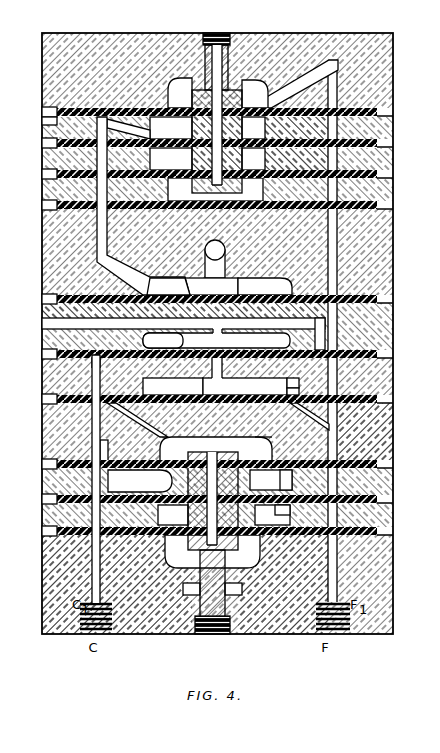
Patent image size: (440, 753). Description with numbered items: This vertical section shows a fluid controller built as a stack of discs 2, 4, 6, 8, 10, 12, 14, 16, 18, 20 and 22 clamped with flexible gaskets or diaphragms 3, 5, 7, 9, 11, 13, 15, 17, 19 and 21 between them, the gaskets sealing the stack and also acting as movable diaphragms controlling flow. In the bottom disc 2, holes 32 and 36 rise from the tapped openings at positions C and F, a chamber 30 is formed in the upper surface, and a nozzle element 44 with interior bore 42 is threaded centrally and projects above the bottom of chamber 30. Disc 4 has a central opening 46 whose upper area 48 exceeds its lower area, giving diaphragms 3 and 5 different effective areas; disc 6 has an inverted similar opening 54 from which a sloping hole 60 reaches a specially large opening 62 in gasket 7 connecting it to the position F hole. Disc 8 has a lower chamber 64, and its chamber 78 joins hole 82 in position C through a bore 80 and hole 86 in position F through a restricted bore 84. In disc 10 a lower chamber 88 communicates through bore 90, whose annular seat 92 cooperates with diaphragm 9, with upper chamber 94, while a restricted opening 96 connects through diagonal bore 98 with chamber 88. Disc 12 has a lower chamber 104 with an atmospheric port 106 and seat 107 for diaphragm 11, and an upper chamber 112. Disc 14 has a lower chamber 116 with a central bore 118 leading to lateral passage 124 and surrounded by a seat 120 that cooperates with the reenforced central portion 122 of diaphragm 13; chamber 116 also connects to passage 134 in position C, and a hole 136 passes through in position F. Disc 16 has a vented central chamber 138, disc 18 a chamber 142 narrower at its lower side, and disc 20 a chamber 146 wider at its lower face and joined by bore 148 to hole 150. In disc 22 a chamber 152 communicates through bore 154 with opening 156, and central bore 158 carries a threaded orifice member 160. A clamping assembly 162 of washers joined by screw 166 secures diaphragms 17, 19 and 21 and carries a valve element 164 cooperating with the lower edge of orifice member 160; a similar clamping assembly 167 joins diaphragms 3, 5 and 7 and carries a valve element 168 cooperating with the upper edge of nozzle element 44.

The disc 2 is at (394, 582).
The disc 4 is at (394, 527).
The disc 6 is at (394, 492).
The disc 8 is at (394, 445).
The disc 10 is at (394, 388).
The disc 12 is at (394, 340).
The disc 14 is at (394, 250).
The disc 16 is at (394, 208).
The disc 18 is at (394, 178).
The disc 20 is at (394, 140).
The disc 22 is at (394, 80).
The gasket 3 is at (85, 529).
The gasket 5 is at (88, 497).
The gasket 7 is at (88, 464).
The diaphragm 9 is at (78, 395).
The diaphragm 11 is at (85, 350).
The diaphragm 13 is at (85, 295).
The gasket 15 is at (92, 203).
The diaphragm 17 is at (92, 170).
The diaphragm 19 is at (92, 140).
The diaphragm 21 is at (92, 108).
The chamber 30 is at (245, 570).
The hole 32 is at (92, 567).
The hole 36 is at (337, 570).
The interior bore 42 is at (190, 585).
The nozzle element 44 is at (225, 612).
The central opening 46 is at (262, 515).
The upper area 48 is at (282, 510).
The central opening 54 is at (150, 485).
The sloping hole 60 is at (291, 487).
The opening 62 is at (275, 468).
The chamber 64 is at (235, 440).
The chamber 78 is at (250, 436).
The bore 80 is at (132, 425).
The vertical hole 82 is at (108, 458).
The restricted bore 84 is at (310, 418).
The vertical hole 86 is at (340, 445).
The chamber 88 is at (292, 394).
The bore 90 is at (250, 385).
The annular seat 92 is at (196, 385).
The chamber 94 is at (289, 383).
The restricted opening 96 is at (94, 367).
The diagonal bore 98 is at (145, 340).
The chamber 104 is at (315, 330).
The central port 106 is at (42, 324).
The seat 107 is at (238, 338).
The chamber 112 is at (150, 312).
The chamber 116 is at (278, 278).
The central bore 118 is at (235, 278).
The seat 120 is at (205, 262).
The reenforced central portion 122 is at (175, 280).
The lateral passage 124 is at (212, 243).
The passage 134 is at (108, 233).
The hole 136 is at (338, 238).
The central opening 138 is at (255, 212).
The opening 142 is at (275, 160).
The central opening 146 is at (275, 128).
The bore 148 is at (122, 115).
The hole 150 is at (42, 122).
The chamber 152 is at (250, 88).
The bore 154 is at (298, 78).
The opening 156 is at (338, 90).
The central bore 158 is at (224, 34).
The orifice member 160 is at (210, 36).
The clamping assembly 162 is at (180, 95).
The valve element 164 is at (224, 62).
The screw 166 is at (165, 158).
The clamping assembly 167 is at (163, 570).
The valve element 168 is at (232, 545).